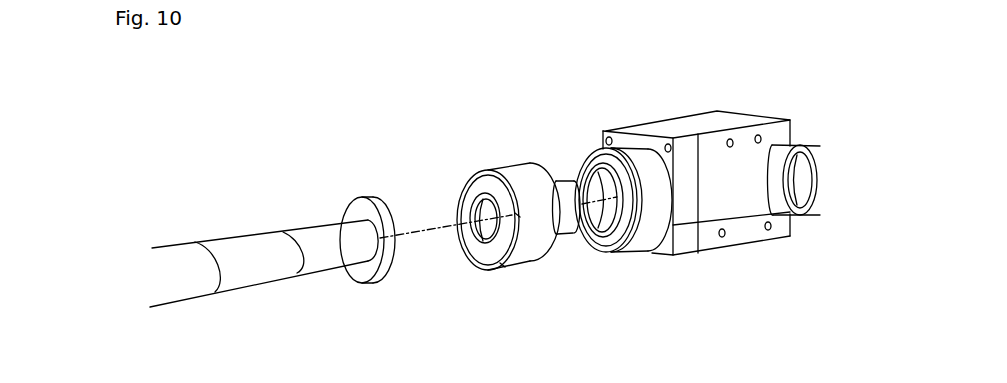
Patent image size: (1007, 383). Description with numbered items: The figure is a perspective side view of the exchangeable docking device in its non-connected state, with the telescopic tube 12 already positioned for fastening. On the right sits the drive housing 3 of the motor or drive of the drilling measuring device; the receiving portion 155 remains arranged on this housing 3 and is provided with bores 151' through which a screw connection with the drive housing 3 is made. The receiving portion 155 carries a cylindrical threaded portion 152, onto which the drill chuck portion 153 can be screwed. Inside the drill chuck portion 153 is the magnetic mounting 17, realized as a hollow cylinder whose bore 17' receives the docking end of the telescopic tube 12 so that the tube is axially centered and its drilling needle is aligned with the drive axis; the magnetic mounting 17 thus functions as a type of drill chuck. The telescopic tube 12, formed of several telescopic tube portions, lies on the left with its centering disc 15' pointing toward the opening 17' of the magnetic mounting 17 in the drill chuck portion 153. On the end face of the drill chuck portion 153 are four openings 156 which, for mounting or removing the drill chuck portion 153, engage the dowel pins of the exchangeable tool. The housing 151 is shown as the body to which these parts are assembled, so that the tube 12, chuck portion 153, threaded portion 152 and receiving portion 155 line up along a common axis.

The drive housing 3 is at (757, 245).
The telescopic tube 12 is at (293, 202).
The centering disc 15' is at (406, 256).
The magnetic mounting 17 is at (486, 245).
The bore 17' is at (490, 254).
The housing 151 is at (696, 151).
The bores 151' is at (698, 109).
The cylindrical threaded portion 152 is at (585, 148).
The drill chuck portion 153 is at (491, 165).
The receiving portion 155 is at (686, 256).
The openings 156 is at (477, 180).